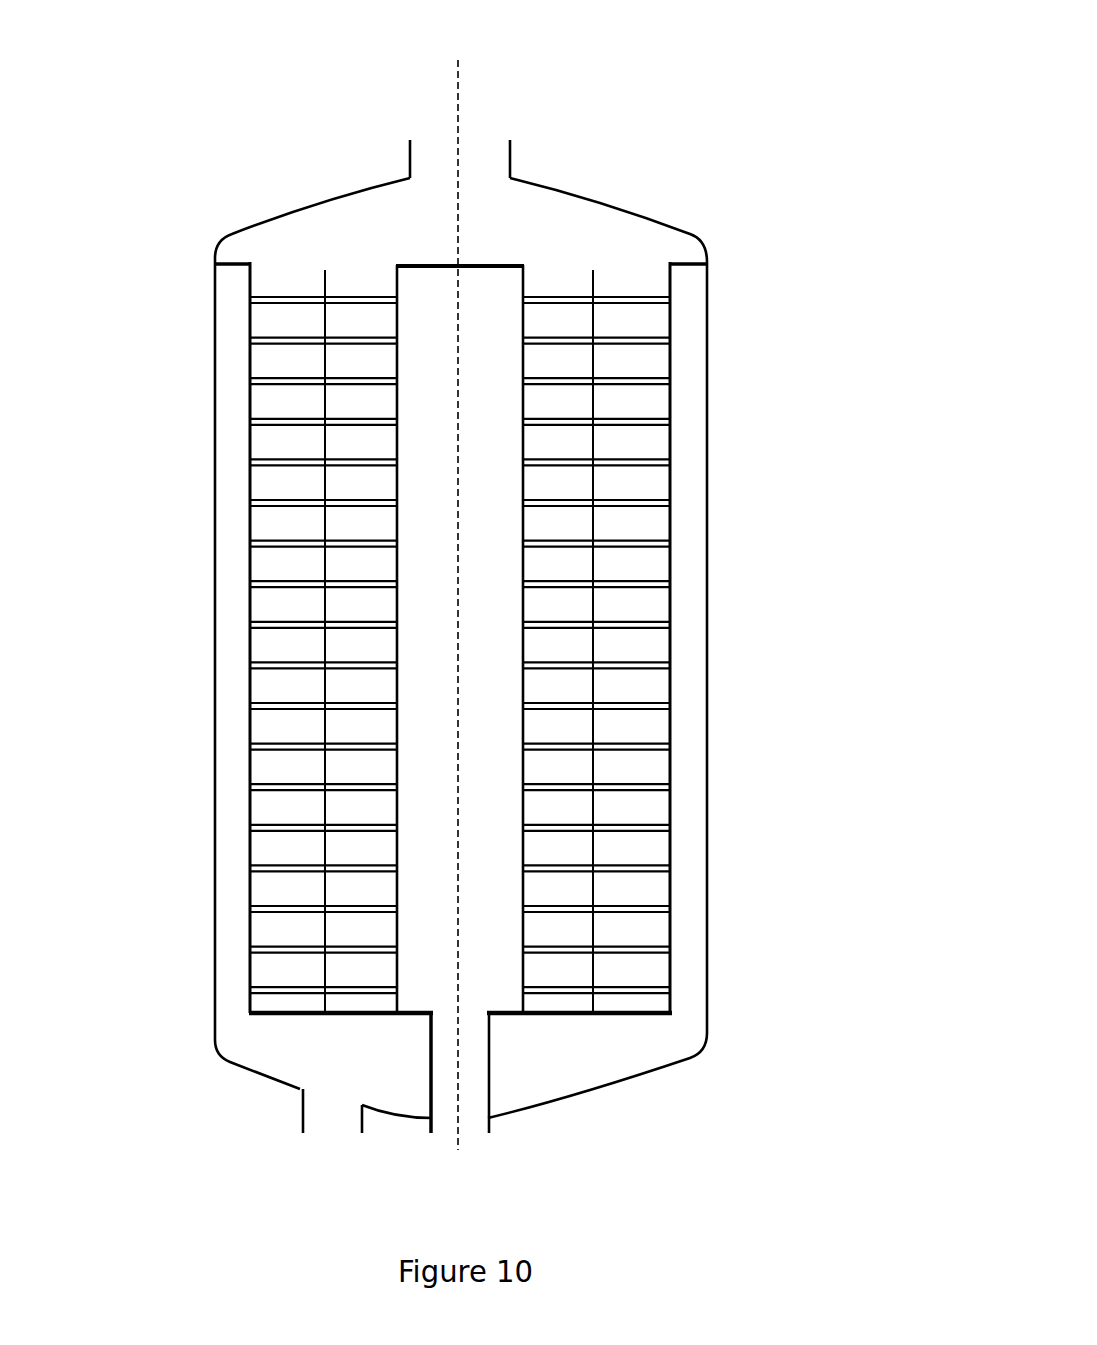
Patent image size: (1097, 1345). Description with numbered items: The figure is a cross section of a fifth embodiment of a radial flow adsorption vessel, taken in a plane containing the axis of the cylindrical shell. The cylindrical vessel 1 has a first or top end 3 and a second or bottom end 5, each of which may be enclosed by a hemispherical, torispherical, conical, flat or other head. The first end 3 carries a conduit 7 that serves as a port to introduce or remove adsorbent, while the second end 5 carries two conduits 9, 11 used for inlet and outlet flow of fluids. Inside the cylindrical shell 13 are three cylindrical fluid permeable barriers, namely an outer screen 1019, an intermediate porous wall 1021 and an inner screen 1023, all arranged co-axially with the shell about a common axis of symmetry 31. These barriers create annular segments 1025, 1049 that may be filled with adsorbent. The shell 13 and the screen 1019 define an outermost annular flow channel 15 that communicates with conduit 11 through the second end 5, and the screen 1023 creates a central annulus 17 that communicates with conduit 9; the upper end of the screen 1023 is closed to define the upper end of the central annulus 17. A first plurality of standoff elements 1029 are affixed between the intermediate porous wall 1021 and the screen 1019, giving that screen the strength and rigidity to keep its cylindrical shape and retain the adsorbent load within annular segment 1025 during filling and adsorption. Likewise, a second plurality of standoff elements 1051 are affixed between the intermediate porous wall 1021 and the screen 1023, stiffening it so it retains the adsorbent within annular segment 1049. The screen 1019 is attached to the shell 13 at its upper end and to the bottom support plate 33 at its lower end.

The vessel 1 is at (567, 638).
The first end 3 is at (618, 200).
The second end 5 is at (653, 1075).
The conduit 7 is at (480, 135).
The conduit 9 is at (470, 1113).
The conduit 11 is at (335, 1128).
The shell 13 is at (706, 682).
The outermost annular flow channel 15 is at (682, 833).
The central annulus 17 is at (487, 518).
The axis of symmetry 31 is at (454, 70).
The bottom support plate 33 is at (553, 1015).
The screen 1019 is at (248, 808).
The intermediate porous wall 1021 is at (325, 892).
The screen 1023 is at (390, 970).
The annular segment 1025 is at (292, 525).
The first plurality of standoff elements 1029 is at (292, 662).
The annular segment 1049 is at (370, 370).
The second plurality of standoff elements 1051 is at (365, 340).